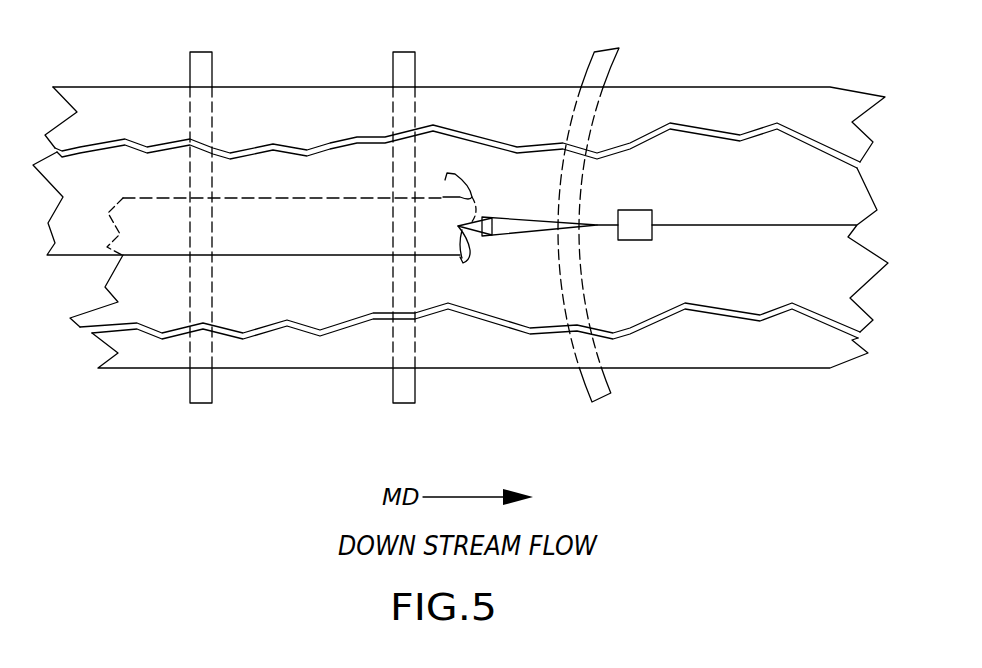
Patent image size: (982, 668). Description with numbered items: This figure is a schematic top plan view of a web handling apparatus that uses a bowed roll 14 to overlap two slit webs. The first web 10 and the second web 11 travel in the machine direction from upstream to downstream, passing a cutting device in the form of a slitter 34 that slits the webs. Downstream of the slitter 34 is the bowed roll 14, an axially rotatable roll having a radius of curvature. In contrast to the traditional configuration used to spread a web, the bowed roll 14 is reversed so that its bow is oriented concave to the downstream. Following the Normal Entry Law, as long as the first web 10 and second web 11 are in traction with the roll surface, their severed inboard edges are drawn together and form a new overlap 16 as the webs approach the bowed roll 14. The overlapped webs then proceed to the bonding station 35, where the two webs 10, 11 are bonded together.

The first web 10 is at (260, 115).
The second web 11 is at (303, 348).
The bowed roll 14 is at (597, 73).
The overlap 16 is at (745, 225).
The slitter 34 is at (503, 225).
The bonding station 35 is at (637, 210).